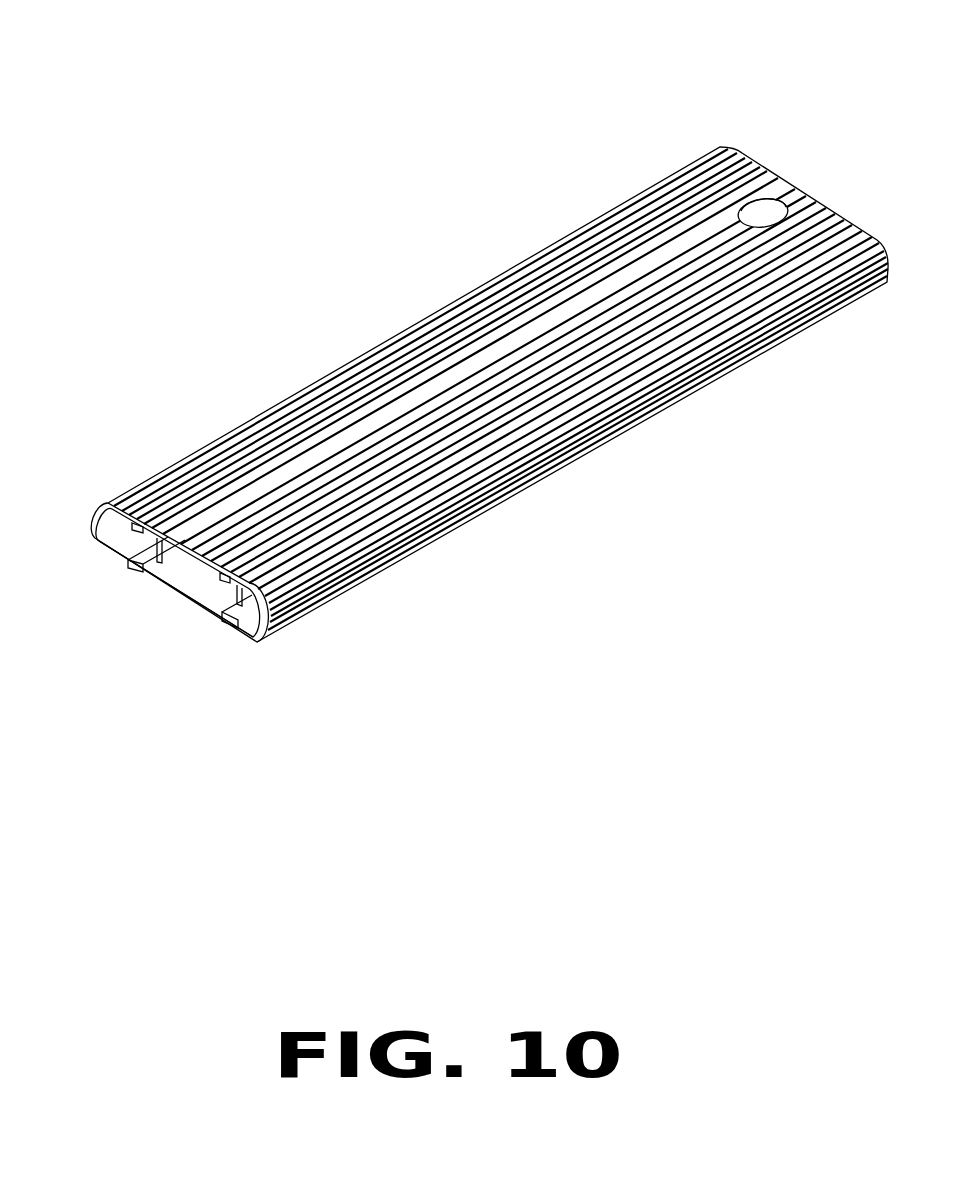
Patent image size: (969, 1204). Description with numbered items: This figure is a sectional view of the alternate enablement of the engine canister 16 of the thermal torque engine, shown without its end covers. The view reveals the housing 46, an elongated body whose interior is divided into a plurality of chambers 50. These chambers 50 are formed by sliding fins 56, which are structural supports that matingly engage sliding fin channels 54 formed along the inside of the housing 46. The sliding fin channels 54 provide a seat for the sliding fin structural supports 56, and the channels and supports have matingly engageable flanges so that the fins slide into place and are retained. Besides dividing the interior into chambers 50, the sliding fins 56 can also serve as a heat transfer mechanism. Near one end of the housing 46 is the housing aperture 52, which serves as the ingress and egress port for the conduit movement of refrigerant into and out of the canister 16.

The canister 16 is at (459, 414).
The housing 46 is at (383, 343).
The chambers 50 is at (190, 600).
The housing aperture 52 is at (767, 218).
The sliding fin channels 54 is at (133, 530).
The sliding fins 56 is at (160, 564).